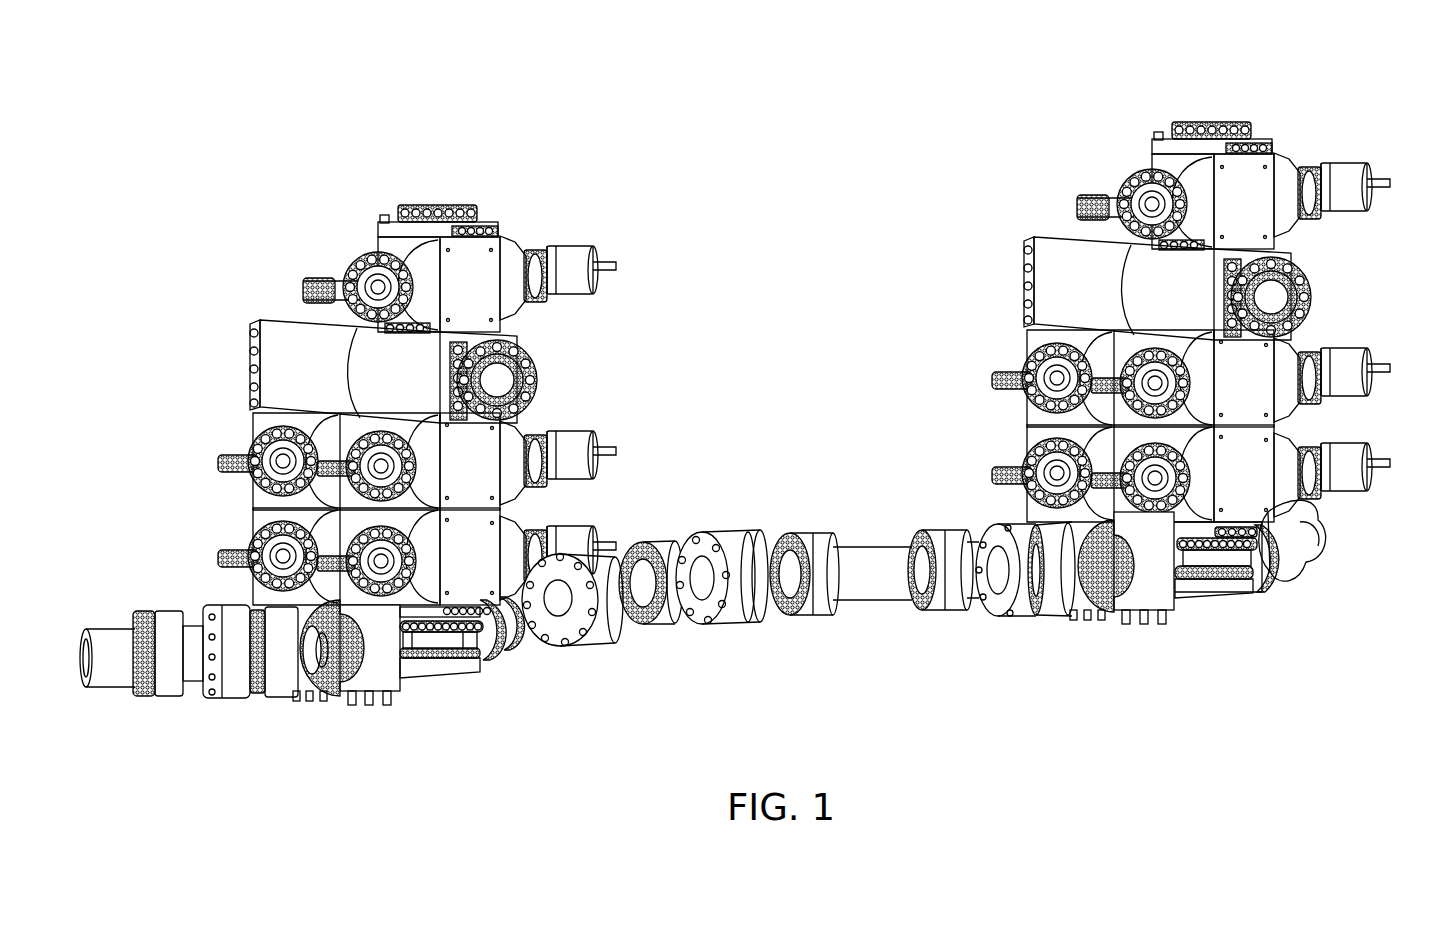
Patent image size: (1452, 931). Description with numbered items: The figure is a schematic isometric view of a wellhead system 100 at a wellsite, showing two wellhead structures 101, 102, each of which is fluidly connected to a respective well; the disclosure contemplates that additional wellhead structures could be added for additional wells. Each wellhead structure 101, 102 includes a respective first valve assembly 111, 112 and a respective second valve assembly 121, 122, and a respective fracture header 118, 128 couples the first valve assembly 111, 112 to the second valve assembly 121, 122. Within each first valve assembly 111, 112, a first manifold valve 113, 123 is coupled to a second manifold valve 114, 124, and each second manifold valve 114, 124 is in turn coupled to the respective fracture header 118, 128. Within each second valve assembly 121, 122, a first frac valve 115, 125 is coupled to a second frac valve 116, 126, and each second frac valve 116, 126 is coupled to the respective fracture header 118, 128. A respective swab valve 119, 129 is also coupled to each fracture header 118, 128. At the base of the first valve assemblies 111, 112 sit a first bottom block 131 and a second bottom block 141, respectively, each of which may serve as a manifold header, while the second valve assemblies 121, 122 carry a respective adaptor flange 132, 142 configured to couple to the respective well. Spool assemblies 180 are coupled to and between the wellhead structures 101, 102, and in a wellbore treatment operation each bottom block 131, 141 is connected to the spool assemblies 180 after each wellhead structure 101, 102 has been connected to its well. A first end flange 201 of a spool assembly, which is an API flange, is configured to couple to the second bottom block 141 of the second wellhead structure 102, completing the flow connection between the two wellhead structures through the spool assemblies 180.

The wellhead system 100 is at (193, 156).
The first wellhead structure 101 is at (436, 745).
The second wellhead structure 102 is at (1324, 655).
The first valve assembly 111 is at (165, 421).
The first valve assembly 112 is at (1004, 311).
The first manifold valve 113 is at (216, 563).
The second manifold valve 114 is at (203, 476).
The first frac valve 115 is at (543, 514).
The second frac valve 116 is at (546, 420).
The fracture header 118 is at (238, 341).
The swab valve 119 is at (536, 232).
The second valve assembly 121 is at (393, 182).
The second valve assembly 122 is at (1250, 112).
The first manifold valve 123 is at (1018, 465).
The second manifold valve 124 is at (1020, 362).
The first frac valve 125 is at (1366, 432).
The second frac valve 126 is at (1355, 332).
The fracture header 128 is at (1036, 232).
The swab valve 129 is at (1340, 153).
The first bottom block 131 is at (338, 702).
The adaptor flange 132 is at (470, 662).
The second bottom block 141 is at (1118, 612).
The adaptor flange 142 is at (1246, 582).
The spool assemblies 180 is at (112, 690).
The first end flange 201 is at (322, 702).